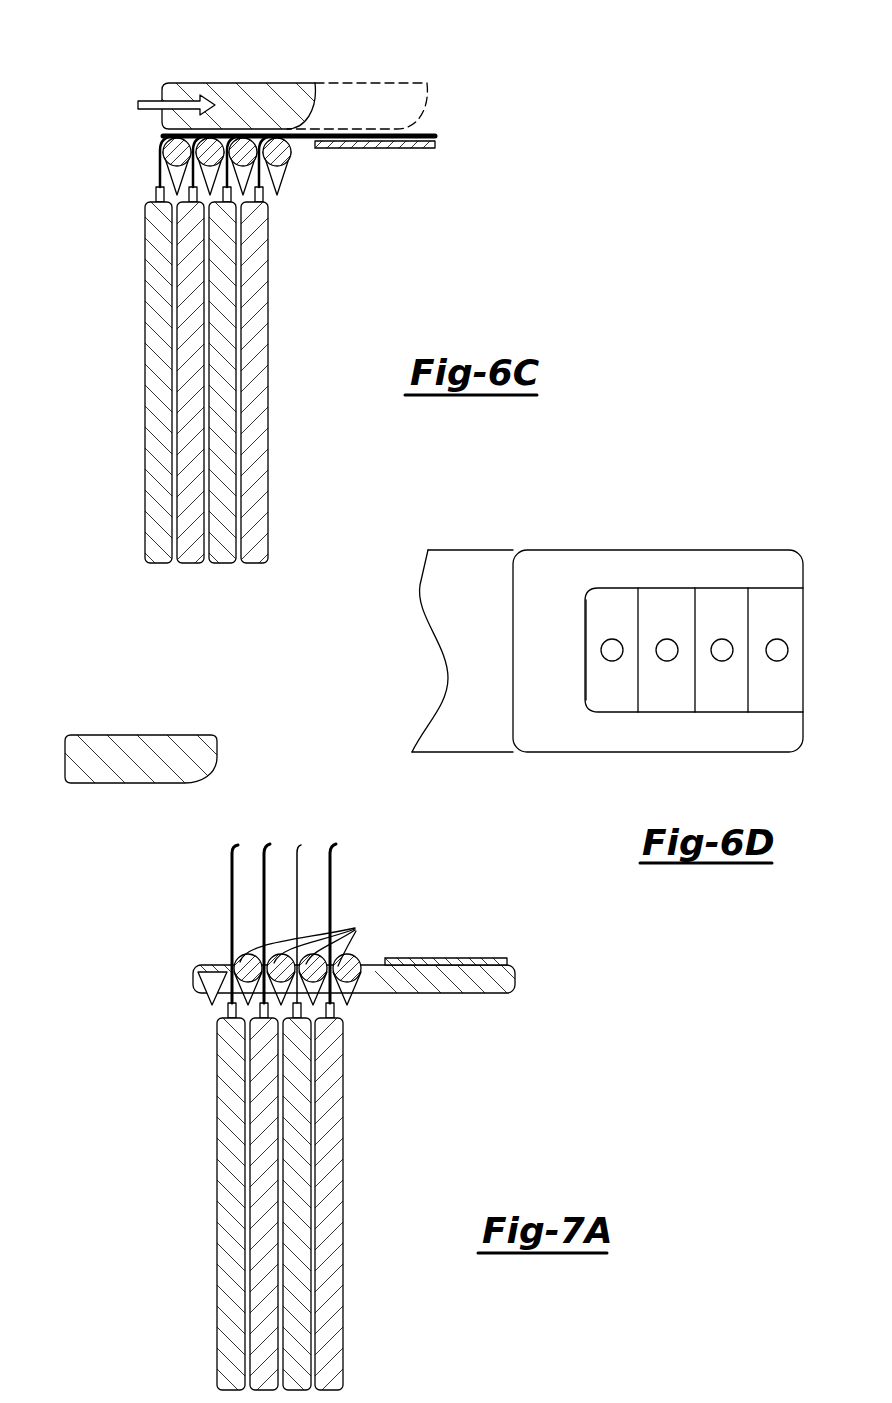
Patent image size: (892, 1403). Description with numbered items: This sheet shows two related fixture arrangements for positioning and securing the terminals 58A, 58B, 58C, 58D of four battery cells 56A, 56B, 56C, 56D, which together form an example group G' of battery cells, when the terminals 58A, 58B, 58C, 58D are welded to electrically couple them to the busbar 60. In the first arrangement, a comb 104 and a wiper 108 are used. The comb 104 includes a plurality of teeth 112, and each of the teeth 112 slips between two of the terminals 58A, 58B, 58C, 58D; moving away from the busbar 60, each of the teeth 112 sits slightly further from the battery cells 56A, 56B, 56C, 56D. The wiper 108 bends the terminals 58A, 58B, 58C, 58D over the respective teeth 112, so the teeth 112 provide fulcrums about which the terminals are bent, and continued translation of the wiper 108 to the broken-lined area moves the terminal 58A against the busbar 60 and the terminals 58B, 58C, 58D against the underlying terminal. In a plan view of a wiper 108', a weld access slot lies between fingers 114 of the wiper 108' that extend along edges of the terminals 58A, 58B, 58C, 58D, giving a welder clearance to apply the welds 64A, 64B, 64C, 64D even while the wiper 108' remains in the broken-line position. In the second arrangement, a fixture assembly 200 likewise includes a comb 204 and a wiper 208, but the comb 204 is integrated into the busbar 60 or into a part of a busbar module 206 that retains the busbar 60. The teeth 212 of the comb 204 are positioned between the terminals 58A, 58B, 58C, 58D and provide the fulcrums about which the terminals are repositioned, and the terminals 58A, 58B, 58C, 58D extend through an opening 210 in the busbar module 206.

In FIG. 6C, the battery cell 56A is at (248, 335).
In FIG. 7A, the battery cell 56A is at (323, 1157).
In FIG. 6C, the battery cell 56B is at (217, 283).
In FIG. 7A, the battery cell 56B is at (296, 1100).
In FIG. 6C, the battery cell 56C is at (192, 283).
In FIG. 7A, the battery cell 56C is at (268, 1100).
In FIG. 6C, the battery cell 56D is at (162, 337).
In FIG. 7A, the battery cell 56D is at (238, 1157).
In FIG. 6C, the terminal 58A is at (425, 133).
In FIG. 6D, the terminal 58A is at (777, 605).
In FIG. 7A, the terminal 58A is at (336, 844).
In FIG. 6C, the terminal 58B is at (390, 133).
In FIG. 6D, the terminal 58B is at (722, 605).
In FIG. 7A, the terminal 58B is at (301, 845).
In FIG. 6C, the terminal 58C is at (360, 133).
In FIG. 6D, the terminal 58C is at (667, 605).
In FIG. 7A, the terminal 58C is at (270, 844).
In FIG. 6C, the terminal 58D is at (327, 133).
In FIG. 6D, the terminal 58D is at (612, 605).
In FIG. 7A, the terminal 58D is at (238, 845).
In FIG. 6C, the busbar 60 is at (392, 148).
In FIG. 7A, the busbar 60 is at (480, 958).
In FIG. 6D, the weld 64A is at (777, 650).
In FIG. 6D, the weld 64B is at (722, 650).
In FIG. 6D, the weld 64C is at (667, 650).
In FIG. 6D, the weld 64D is at (612, 650).
In FIG. 6C, the comb 104 is at (300, 177).
In FIG. 6C, the wiper 108 is at (271, 81).
In FIG. 6D, the wiper 108' is at (607, 619).
In FIG. 6C, the teeth 112 is at (168, 158).
In FIG. 6D, the fingers 114 is at (790, 568).
In FIG. 7A, the fixture assembly 200 is at (420, 860).
In FIG. 7A, the comb 204 is at (370, 1011).
In FIG. 7A, the busbar module 206 is at (490, 985).
In FIG. 7A, the wiper 208 is at (118, 768).
In FIG. 7A, the opening 210 is at (220, 941).
In FIG. 7A, the teeth 212 is at (309, 934).
In FIG. 6C, the group of battery cells G' is at (118, 171).